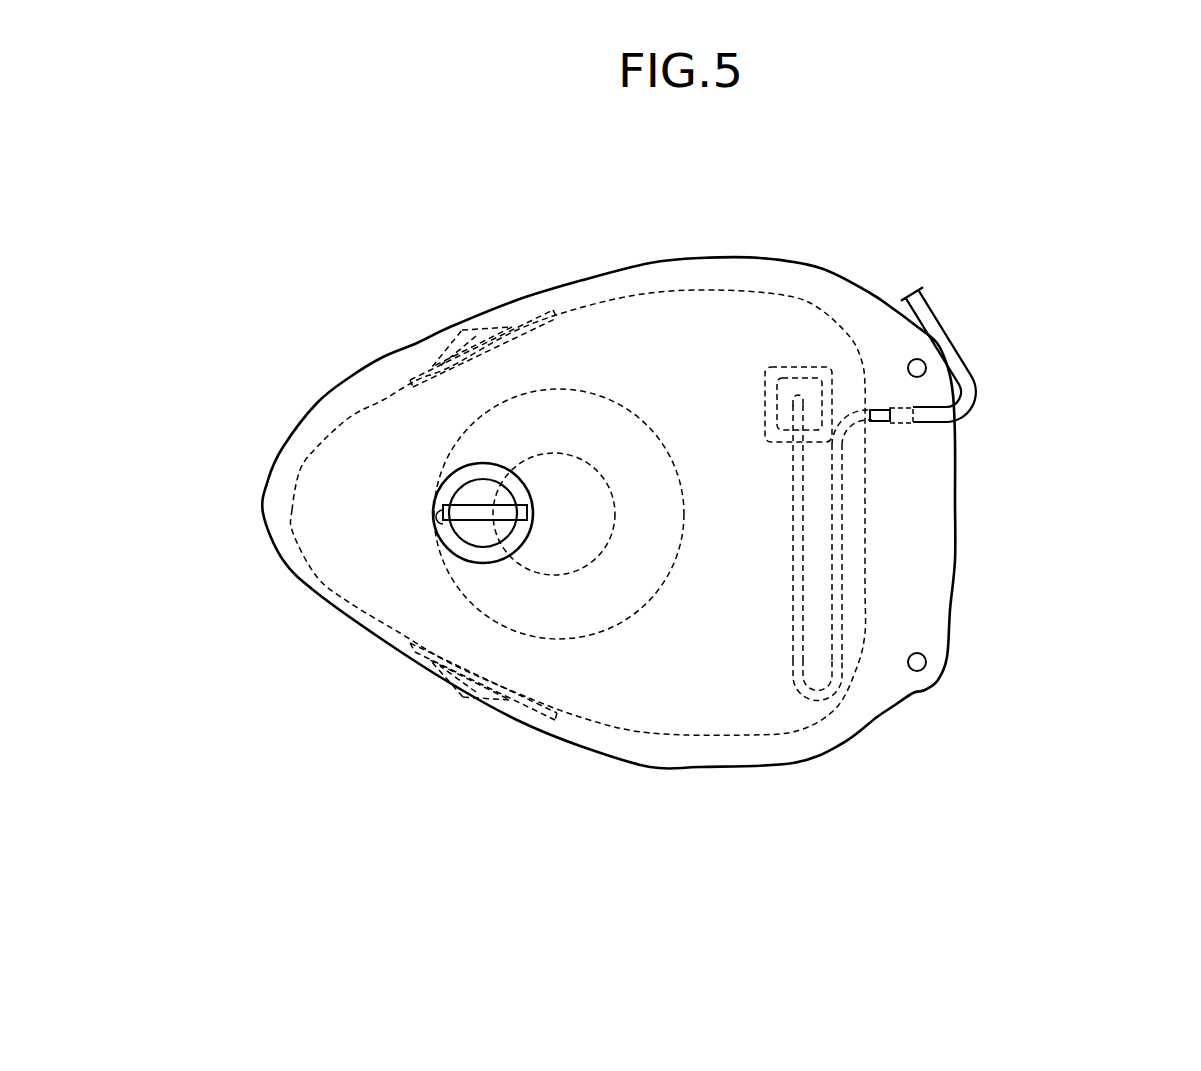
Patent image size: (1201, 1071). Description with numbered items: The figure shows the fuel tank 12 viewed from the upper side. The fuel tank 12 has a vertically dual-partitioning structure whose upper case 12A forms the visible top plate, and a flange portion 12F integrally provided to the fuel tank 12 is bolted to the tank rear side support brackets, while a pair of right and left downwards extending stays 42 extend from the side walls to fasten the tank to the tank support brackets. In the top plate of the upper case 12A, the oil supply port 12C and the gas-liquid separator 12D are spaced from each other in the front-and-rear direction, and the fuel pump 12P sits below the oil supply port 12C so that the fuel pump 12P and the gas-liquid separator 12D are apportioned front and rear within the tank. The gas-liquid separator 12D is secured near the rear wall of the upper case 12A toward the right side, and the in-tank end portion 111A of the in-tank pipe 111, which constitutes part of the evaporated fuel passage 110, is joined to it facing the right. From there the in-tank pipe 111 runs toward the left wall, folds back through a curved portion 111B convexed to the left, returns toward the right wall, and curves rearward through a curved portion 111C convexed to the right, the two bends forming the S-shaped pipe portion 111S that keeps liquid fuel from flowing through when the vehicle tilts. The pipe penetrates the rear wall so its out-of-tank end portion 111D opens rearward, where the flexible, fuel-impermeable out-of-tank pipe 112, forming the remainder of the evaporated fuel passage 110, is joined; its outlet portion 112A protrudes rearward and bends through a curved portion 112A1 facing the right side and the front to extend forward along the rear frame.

The fuel tank 12 is at (663, 252).
The upper case 12A is at (300, 422).
The oil supply port 12C is at (438, 524).
The gas-liquid separator 12D is at (797, 365).
The flange portion 12F is at (913, 697).
The fuel pump 12P is at (598, 470).
The downwards extending stay 42 is at (443, 351).
The in-tank pipe 111 is at (847, 533).
The evaporated fuel passage 110 is at (931, 347).
The in-tank end portion 111A is at (791, 402).
The curved portion 111B is at (807, 693).
The curved portion 111C is at (928, 327).
The S-shaped pipe portion 111S is at (850, 410).
The out-of-tank end portion 111D is at (903, 423).
The out-of-tank pipe 112 is at (931, 347).
The pipe outlet portion 112A is at (1044, 354).
The curved portion 112A1 is at (978, 385).